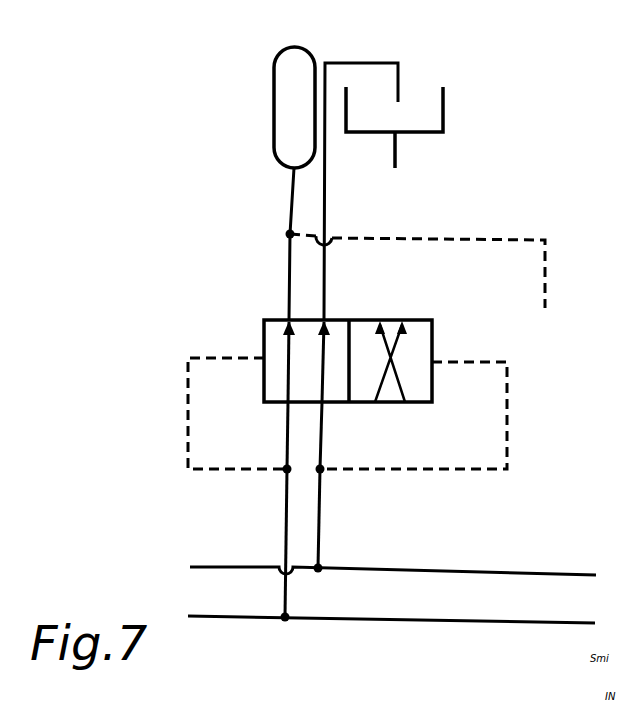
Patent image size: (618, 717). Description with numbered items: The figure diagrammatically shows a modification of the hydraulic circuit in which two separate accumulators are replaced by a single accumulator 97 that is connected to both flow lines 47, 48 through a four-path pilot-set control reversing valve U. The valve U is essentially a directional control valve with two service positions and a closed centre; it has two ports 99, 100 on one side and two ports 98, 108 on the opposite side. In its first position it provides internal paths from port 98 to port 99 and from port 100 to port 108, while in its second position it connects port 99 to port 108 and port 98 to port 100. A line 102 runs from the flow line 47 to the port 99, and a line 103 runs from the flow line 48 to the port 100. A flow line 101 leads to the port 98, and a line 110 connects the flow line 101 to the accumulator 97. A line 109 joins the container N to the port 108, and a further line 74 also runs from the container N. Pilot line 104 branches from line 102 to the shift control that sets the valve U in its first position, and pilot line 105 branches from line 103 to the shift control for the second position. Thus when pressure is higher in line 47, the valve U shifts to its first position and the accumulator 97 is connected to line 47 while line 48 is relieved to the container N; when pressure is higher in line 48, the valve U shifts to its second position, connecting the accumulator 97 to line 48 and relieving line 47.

The accumulator 97 is at (273, 91).
The line 110 is at (286, 199).
The line 109 is at (328, 206).
The container N is at (446, 116).
The line 74 is at (397, 160).
The flow line 101 is at (549, 271).
The control reversing valve U is at (436, 338).
The port 98 is at (288, 318).
The port 108 is at (328, 318).
The line 104 is at (188, 399).
The line 105 is at (509, 406).
The port 99 is at (286, 405).
The port 100 is at (325, 405).
The line 102 is at (285, 512).
The line 103 is at (322, 521).
The flow line 48 is at (453, 575).
The flow line 47 is at (436, 623).